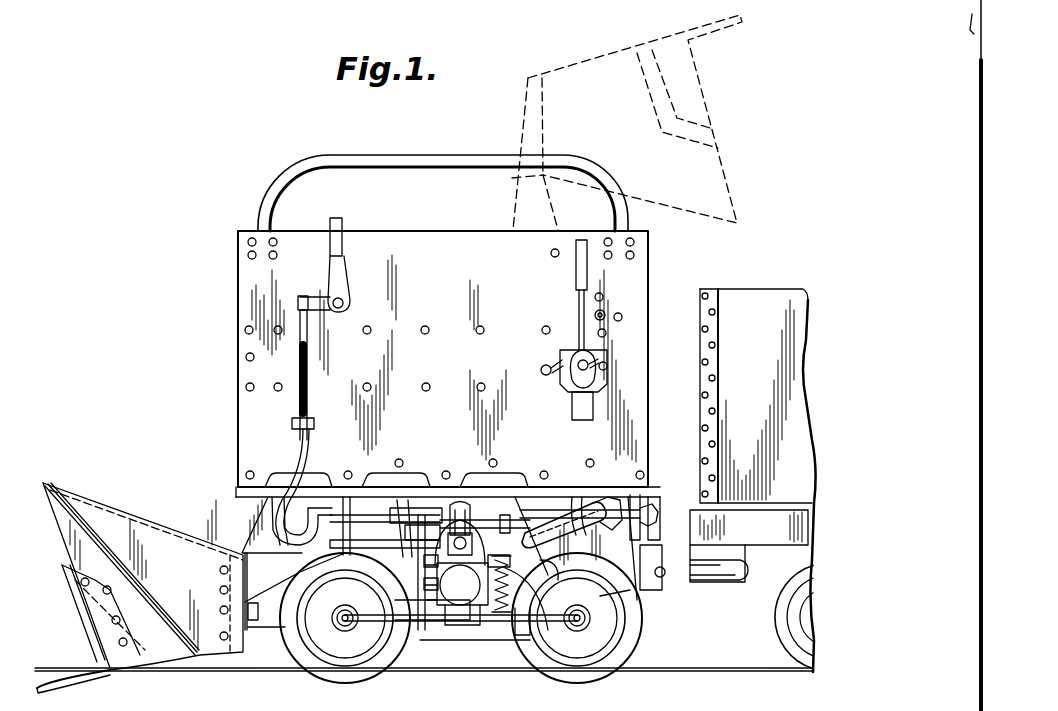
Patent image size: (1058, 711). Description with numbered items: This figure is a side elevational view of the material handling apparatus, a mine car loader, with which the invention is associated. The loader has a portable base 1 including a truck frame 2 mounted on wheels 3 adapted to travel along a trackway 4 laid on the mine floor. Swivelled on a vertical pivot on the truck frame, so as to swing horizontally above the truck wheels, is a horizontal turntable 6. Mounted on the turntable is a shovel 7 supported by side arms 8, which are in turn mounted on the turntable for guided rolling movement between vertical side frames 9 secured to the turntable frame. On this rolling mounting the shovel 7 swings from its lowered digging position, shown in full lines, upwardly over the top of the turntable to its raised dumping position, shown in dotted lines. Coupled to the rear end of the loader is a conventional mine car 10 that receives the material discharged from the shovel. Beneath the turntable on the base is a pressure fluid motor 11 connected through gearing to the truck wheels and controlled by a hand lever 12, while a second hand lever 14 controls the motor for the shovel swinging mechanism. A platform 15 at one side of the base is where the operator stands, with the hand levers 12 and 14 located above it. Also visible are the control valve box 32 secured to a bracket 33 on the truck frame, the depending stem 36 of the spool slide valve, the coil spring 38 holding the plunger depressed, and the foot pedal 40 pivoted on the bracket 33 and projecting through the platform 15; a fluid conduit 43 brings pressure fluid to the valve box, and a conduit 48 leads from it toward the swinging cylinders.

The portable base 1 is at (302, 555).
The truck frame 2 is at (642, 490).
The wheels 3 is at (238, 495).
The trackway 4 is at (690, 666).
The horizontal turntable 6 is at (246, 468).
The shovel 7 is at (85, 510).
The side arms 8 is at (232, 498).
The vertical side frames 9 is at (447, 248).
The mine car 10 is at (745, 305).
The pressure fluid motor 11 is at (456, 640).
The hand lever 12 is at (336, 230).
The hand lever 14 is at (582, 275).
The platform 15 is at (540, 627).
The control valve box 32 is at (479, 535).
The bracket 33 is at (535, 625).
The depending stem 36 is at (502, 617).
The coil spring 38 is at (535, 640).
The foot pedal 40 is at (490, 640).
The fluid conduit 43 is at (440, 628).
The conduit 48 is at (622, 592).